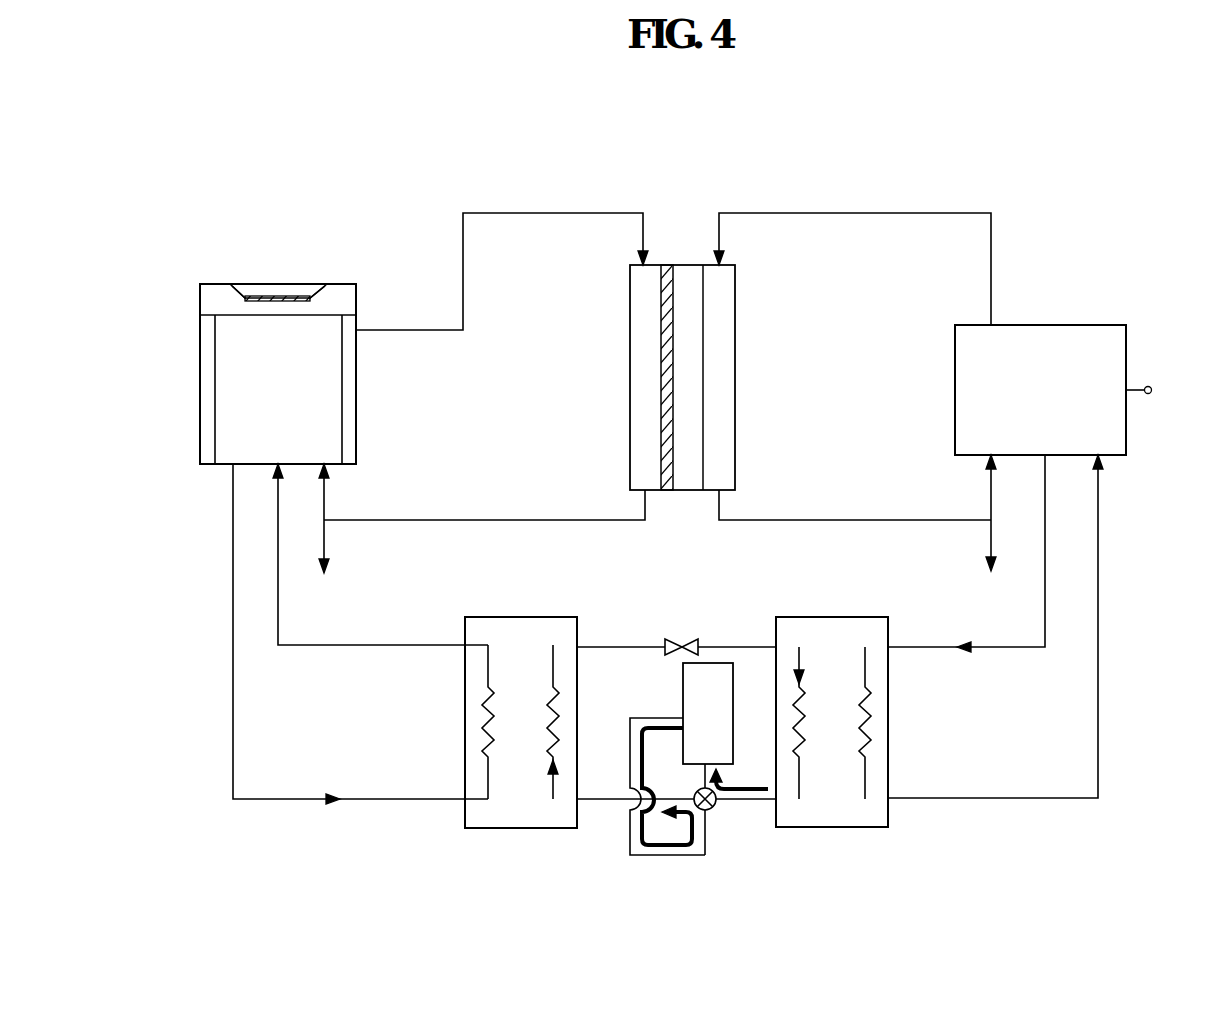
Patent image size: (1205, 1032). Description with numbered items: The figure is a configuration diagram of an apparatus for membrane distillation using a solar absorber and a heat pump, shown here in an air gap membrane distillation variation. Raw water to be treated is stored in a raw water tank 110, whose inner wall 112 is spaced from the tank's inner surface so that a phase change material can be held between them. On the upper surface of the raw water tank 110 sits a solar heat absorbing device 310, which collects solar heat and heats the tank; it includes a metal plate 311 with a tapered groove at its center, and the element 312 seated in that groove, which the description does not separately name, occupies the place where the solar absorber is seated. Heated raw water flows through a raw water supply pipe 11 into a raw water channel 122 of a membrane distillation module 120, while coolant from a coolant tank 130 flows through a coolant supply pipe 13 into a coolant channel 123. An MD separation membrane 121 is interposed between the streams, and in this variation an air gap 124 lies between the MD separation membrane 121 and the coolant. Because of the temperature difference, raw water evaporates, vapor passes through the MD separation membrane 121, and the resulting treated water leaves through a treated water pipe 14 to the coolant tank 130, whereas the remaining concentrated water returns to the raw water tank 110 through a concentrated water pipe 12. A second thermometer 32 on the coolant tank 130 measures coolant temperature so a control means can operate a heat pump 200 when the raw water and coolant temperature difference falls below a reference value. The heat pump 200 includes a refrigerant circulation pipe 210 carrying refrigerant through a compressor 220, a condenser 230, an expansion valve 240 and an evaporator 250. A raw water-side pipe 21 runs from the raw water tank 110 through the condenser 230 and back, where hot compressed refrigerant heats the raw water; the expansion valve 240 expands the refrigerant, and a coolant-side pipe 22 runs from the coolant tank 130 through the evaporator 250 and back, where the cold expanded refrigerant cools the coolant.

The raw water tank 110 is at (200, 373).
The inner wall 112 is at (215, 437).
The solar heat absorbing device 310 is at (343, 211).
The metal plate 311 is at (337, 292).
The filter 312 is at (290, 296).
The raw water supply pipe 11 is at (463, 245).
The concentrated water pipe 12 is at (610, 520).
The coolant supply pipe 13 is at (752, 213).
The treated water pipe 14 is at (782, 520).
The membrane distillation module 120 is at (753, 272).
The MD separation membrane 121 is at (661, 292).
The raw water channel 122 is at (646, 352).
The coolant channel 123 is at (722, 330).
The air gap 124 is at (692, 382).
The coolant tank 130 is at (1085, 325).
The second thermometer 32 is at (1150, 386).
The raw water-side pipe 21 is at (290, 799).
The coolant-side pipe 22 is at (1002, 798).
The heat pump 200 is at (668, 868).
The refrigerant circulation pipe 210 is at (598, 799).
The compressor 220 is at (683, 690).
The condenser 230 is at (500, 828).
The expansion valve 240 is at (692, 638).
The evaporator 250 is at (840, 827).